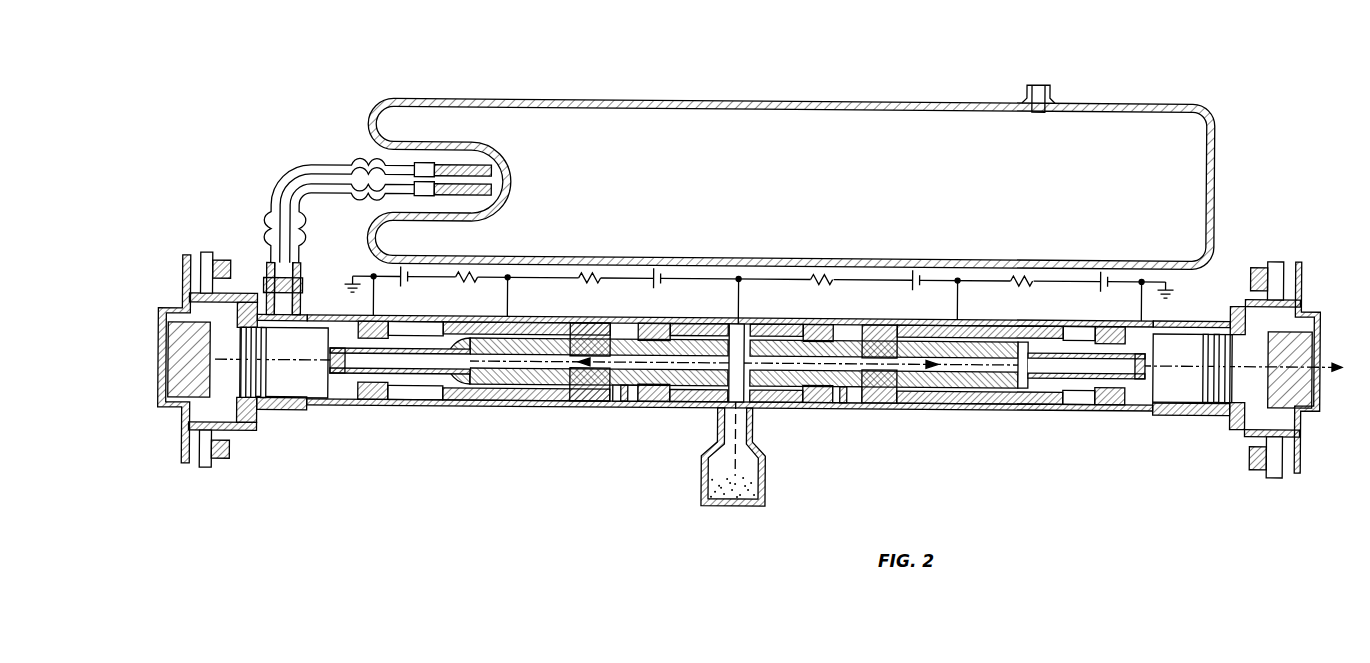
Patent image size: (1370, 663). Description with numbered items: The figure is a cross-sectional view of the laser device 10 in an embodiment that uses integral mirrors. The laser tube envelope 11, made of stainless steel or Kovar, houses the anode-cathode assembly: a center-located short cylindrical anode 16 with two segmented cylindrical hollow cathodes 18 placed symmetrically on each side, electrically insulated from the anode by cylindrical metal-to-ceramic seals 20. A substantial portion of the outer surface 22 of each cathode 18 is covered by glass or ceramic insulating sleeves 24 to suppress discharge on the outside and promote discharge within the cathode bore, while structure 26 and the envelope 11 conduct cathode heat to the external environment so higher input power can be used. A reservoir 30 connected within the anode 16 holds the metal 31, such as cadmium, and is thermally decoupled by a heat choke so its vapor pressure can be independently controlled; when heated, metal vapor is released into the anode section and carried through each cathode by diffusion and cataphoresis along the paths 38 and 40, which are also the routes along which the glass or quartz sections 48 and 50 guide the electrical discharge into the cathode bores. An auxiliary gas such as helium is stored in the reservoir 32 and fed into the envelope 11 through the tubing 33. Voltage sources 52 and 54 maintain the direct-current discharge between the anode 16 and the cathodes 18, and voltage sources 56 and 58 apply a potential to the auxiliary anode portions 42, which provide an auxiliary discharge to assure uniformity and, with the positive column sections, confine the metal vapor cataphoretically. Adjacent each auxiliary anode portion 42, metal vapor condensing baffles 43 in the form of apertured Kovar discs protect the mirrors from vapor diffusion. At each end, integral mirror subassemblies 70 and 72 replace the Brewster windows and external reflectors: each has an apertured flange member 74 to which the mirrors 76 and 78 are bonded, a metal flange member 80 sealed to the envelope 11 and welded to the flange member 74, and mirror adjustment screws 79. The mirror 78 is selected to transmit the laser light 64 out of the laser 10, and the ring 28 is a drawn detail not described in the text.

The laser device 10 is at (1227, 233).
The laser tube envelope 11 is at (486, 408).
The anode 16 is at (748, 323).
The hollow cathode 18 is at (585, 320).
The metal-to-ceramic seal 20 is at (348, 320).
The outer surface of cathode 22 is at (615, 406).
The insulating sleeve 24 is at (490, 323).
The structure 26 is at (592, 406).
The ring 28 is at (841, 410).
The reservoir 30 is at (701, 500).
The metal 31 is at (755, 490).
The reservoir 32 is at (867, 101).
The tubing 33 is at (295, 180).
The vapor flow path 38 is at (628, 408).
The vapor flow path 40 is at (910, 368).
The auxiliary anode portion 42 is at (293, 413).
The metal vapor condensing baffles 43 is at (270, 350).
The positive column discharge section 48 is at (348, 406).
The discharge guide section 50 is at (1074, 392).
The voltage source 52 is at (649, 283).
The voltage source 54 is at (906, 285).
The voltage source 56 is at (404, 285).
The voltage source 58 is at (1098, 286).
The laser light output 64 is at (1320, 362).
The integral mirror subassembly 70 is at (239, 363).
The integral mirror subassembly 72 is at (1236, 369).
The apertured flange member 74 is at (178, 268).
The mirror 76 is at (221, 390).
The mirror 78 is at (1283, 330).
The mirror adjustment screw 79 is at (219, 256).
The metal flange member 80 is at (241, 434).